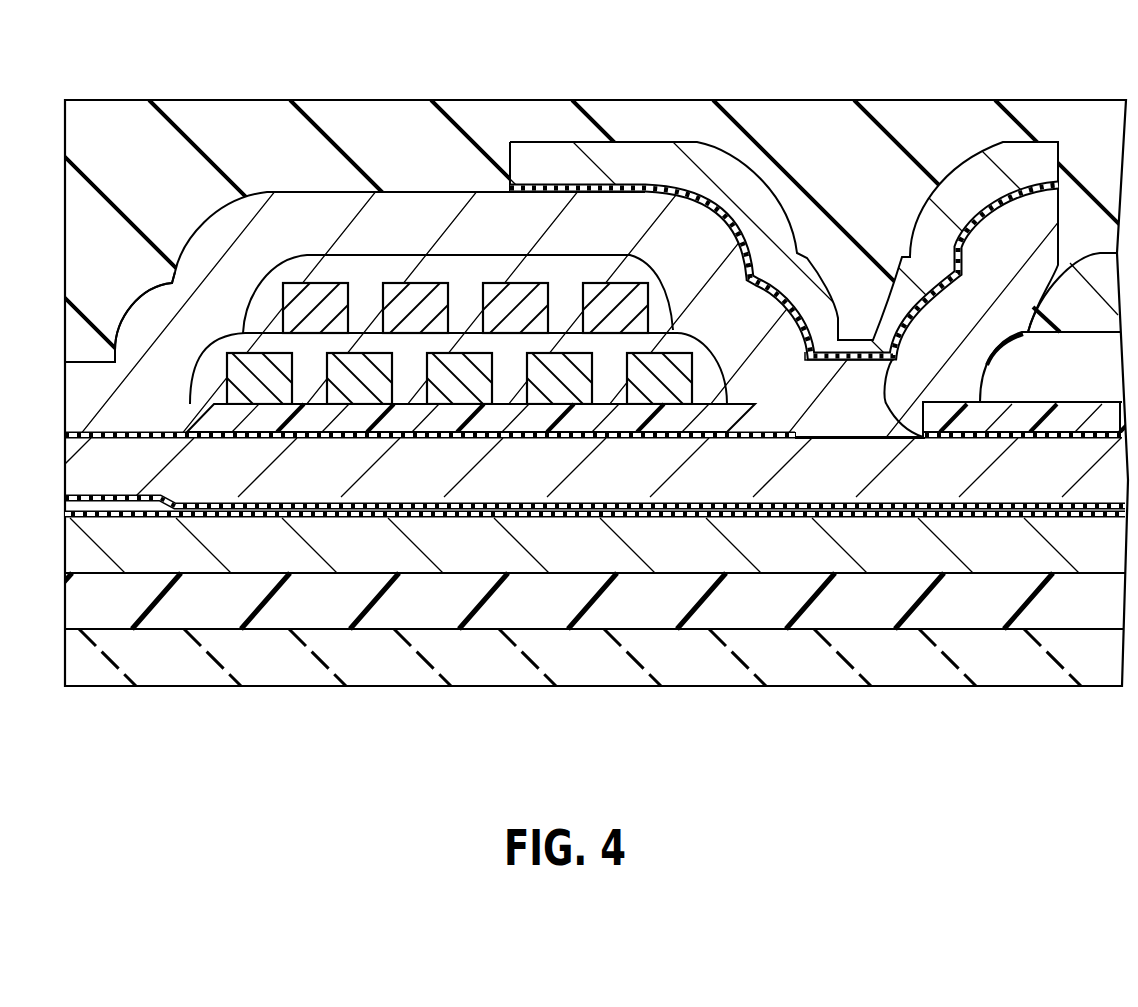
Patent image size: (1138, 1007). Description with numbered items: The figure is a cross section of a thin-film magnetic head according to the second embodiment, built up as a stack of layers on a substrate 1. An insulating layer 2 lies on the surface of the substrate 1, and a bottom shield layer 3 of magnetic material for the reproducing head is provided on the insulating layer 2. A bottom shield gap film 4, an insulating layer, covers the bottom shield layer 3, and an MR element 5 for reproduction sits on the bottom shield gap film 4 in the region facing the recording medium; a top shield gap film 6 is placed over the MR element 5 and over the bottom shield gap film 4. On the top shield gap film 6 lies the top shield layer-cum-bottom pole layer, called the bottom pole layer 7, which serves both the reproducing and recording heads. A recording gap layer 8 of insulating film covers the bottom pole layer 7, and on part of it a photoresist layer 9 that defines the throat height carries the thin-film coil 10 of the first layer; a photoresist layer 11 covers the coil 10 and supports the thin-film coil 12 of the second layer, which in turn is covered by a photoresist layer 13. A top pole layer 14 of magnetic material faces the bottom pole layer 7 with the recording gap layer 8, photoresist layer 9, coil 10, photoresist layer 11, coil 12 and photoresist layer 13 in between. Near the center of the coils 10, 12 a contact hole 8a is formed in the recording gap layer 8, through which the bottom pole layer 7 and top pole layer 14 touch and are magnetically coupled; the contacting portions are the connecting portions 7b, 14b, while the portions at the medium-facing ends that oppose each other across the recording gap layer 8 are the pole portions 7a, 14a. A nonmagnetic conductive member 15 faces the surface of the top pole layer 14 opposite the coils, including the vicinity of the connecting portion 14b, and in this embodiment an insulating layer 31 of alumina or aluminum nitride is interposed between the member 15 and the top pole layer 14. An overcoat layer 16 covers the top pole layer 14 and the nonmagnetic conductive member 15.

The substrate 1 is at (206, 675).
The insulating layer 2 is at (275, 617).
The bottom shield layer 3 is at (408, 557).
The bottom shield gap film 4 is at (670, 513).
The MR element 5 is at (98, 463).
The top shield gap film 6 is at (807, 513).
The bottom pole layer 7 is at (492, 483).
The pole portion 7a is at (88, 487).
The connecting portion 7b is at (840, 483).
The recording gap layer 8 is at (127, 428).
The contact hole 8a is at (880, 385).
The photoresist layer 9 is at (188, 420).
The thin-film coil 10 is at (277, 360).
The photoresist layer 11 is at (367, 343).
The thin-film coil 12 is at (413, 283).
The photoresist layer 13 is at (506, 265).
The top pole layer 14 is at (563, 210).
The pole portion 14a is at (88, 378).
The connecting portion 14b is at (857, 378).
The nonmagnetic conductive member 15 is at (633, 157).
The overcoat layer 16 is at (770, 112).
The insulating layer 31 is at (665, 186).